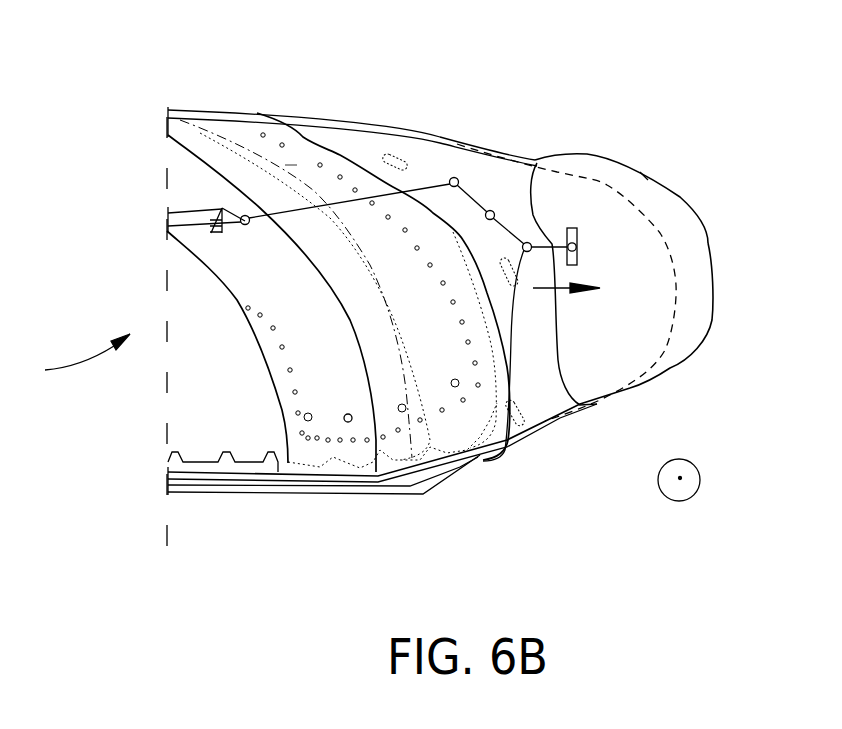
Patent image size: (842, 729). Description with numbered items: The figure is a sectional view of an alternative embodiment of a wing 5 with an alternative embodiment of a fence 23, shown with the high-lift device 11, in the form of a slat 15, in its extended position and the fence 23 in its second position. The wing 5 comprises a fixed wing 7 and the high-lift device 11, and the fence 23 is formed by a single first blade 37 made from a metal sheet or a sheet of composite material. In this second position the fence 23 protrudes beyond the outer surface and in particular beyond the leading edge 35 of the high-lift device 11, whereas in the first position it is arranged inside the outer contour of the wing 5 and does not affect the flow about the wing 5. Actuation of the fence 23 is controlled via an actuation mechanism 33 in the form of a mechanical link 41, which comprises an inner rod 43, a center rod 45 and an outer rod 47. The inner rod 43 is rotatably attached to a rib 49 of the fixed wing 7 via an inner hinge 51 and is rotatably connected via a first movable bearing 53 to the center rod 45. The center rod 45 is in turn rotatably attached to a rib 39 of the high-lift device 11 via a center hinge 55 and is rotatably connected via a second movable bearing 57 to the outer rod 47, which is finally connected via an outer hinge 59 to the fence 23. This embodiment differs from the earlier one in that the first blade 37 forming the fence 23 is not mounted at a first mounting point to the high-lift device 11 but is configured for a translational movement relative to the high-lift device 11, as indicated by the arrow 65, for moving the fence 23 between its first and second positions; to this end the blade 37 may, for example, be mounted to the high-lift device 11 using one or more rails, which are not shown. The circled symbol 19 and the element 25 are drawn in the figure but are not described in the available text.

The wing 5 is at (77, 361).
The fixed wing 7 is at (322, 400).
The high-lift device 11 is at (534, 437).
The slat 15 is at (534, 437).
The longitudinal axis 19 is at (682, 482).
The fence 23 is at (396, 131).
The inner fixed structure 25 is at (203, 110).
The actuation mechanism 33 is at (290, 145).
The leading edge 35 is at (678, 250).
The first blade 37 is at (693, 308).
The rib 39 is at (548, 403).
The mechanical link 41 is at (290, 145).
The inner rod 43 is at (340, 203).
The center rod 45 is at (492, 211).
The outer rod 47 is at (644, 176).
The rib 49 is at (348, 422).
The inner hinge 51 is at (240, 224).
The first movable bearing 53 is at (455, 178).
The center hinge 55 is at (554, 246).
The second movable bearing 57 is at (508, 420).
The outer hinge 59 is at (576, 238).
The arrow 65 is at (557, 290).